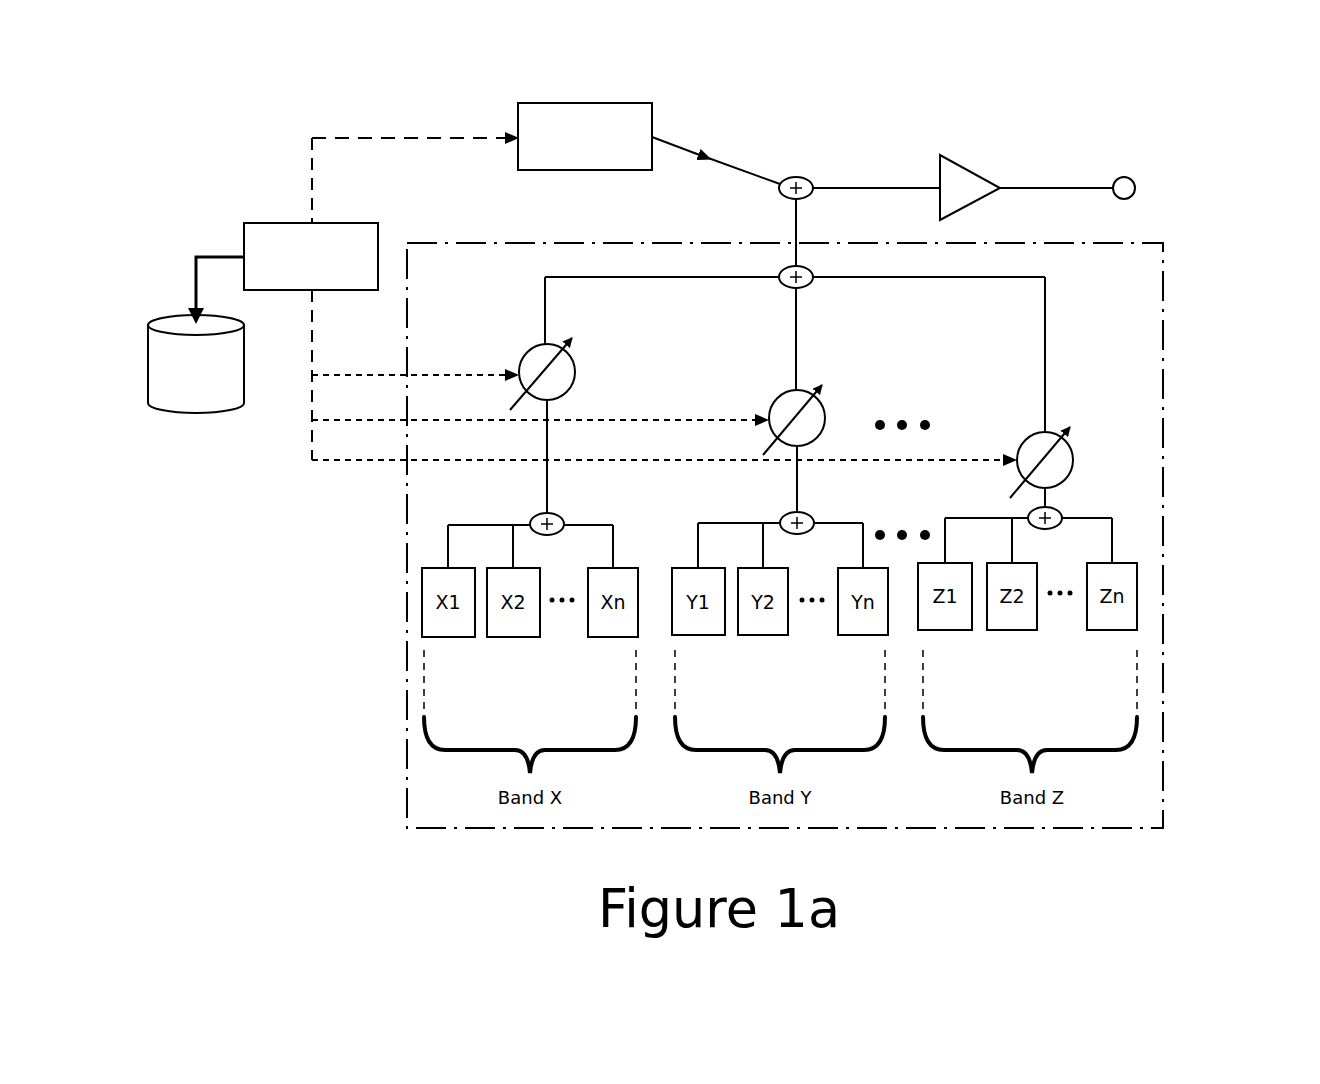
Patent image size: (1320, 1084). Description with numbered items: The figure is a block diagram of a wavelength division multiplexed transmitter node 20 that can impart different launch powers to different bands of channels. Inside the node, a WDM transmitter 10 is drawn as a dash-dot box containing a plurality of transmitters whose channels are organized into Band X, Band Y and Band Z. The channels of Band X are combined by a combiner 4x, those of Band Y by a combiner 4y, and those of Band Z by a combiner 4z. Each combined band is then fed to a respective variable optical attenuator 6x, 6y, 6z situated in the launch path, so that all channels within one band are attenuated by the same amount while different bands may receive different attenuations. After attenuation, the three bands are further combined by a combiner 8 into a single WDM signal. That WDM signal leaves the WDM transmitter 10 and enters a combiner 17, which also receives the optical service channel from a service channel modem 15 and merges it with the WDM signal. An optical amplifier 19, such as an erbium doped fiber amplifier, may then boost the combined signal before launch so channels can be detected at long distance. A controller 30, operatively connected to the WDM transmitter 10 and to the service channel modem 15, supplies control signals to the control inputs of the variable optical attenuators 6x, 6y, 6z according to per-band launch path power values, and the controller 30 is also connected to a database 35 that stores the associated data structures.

The WDM transmitter 10 is at (1165, 535).
The service channel modem 15 is at (587, 103).
The combiner 17 is at (800, 177).
The optical amplifier 19 is at (968, 170).
The wavelength division multiplexed transmitter node 20 is at (1281, 367).
The controller 30 is at (380, 255).
The database 35 is at (195, 412).
The combiner 8 is at (812, 285).
The variable optical attenuator 6x is at (576, 380).
The variable optical attenuator 6y is at (824, 410).
The variable optical attenuator 6z is at (1072, 452).
The combiner 4x is at (555, 514).
The combiner 4y is at (805, 513).
The combiner 4z is at (1062, 512).